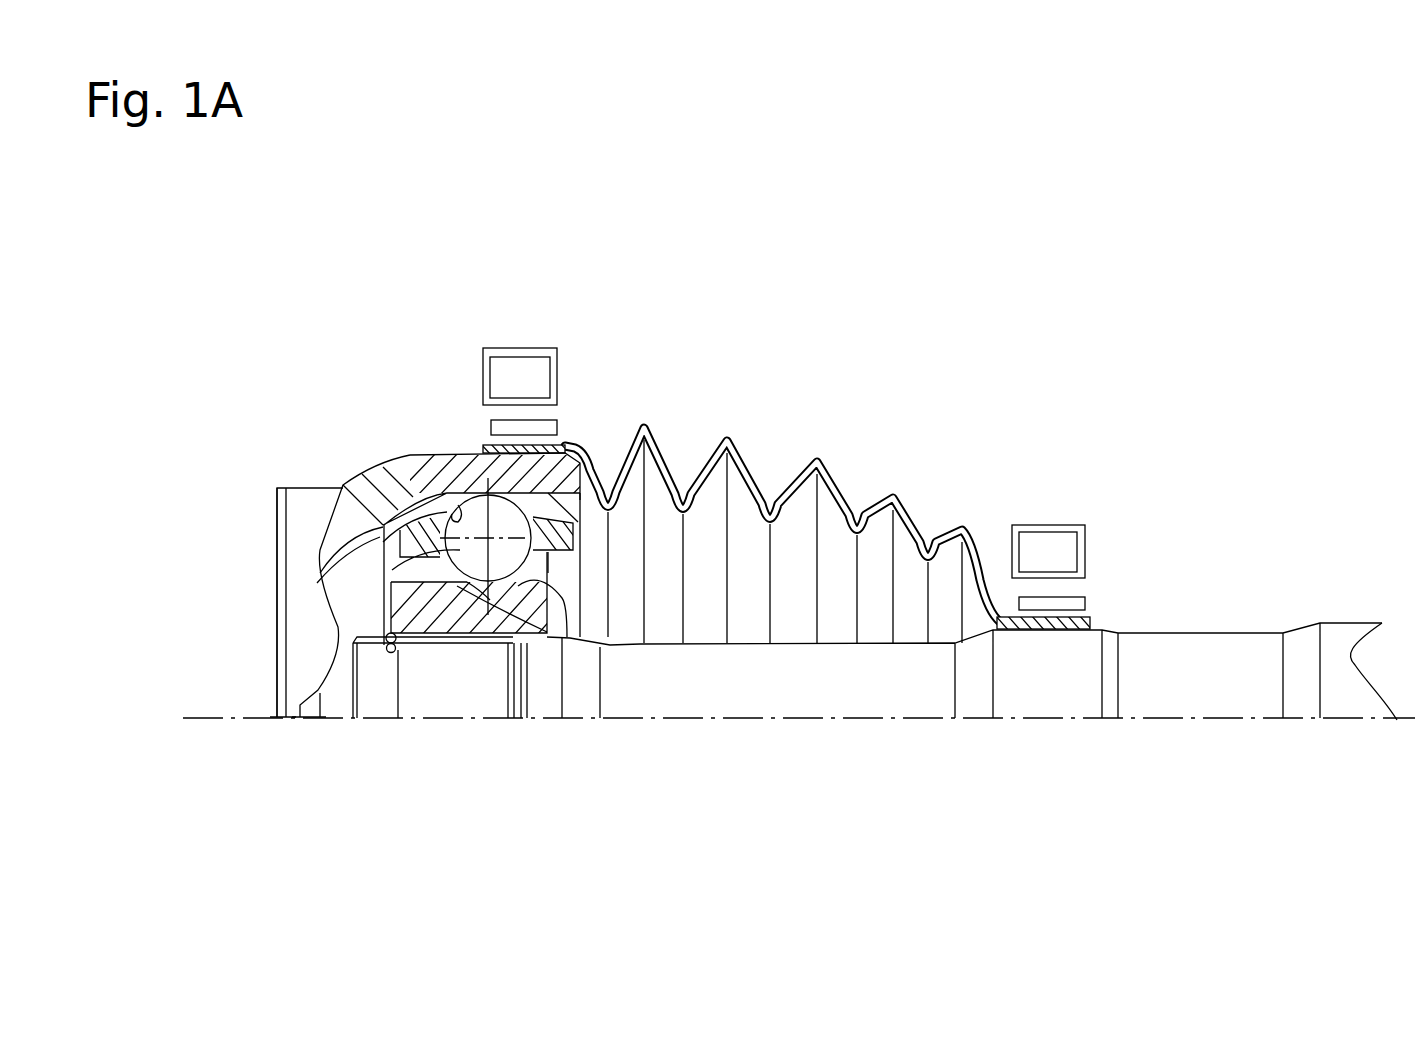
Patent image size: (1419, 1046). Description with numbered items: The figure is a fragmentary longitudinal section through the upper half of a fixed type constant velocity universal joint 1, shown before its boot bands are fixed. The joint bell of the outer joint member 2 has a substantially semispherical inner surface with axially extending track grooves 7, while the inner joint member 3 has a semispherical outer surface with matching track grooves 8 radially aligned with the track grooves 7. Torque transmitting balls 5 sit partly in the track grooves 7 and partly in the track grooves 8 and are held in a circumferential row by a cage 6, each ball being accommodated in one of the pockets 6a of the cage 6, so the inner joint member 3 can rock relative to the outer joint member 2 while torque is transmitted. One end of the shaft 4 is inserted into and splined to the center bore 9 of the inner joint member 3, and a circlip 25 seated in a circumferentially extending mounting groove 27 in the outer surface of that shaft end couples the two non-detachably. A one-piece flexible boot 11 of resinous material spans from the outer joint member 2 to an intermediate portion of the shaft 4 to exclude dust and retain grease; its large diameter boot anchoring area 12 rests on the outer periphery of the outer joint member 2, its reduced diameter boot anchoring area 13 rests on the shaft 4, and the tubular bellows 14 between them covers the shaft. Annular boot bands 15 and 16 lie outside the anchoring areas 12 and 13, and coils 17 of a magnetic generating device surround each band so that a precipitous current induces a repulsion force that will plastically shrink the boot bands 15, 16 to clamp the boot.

The constant velocity universal joint 1 is at (295, 423).
The outer joint member 2 is at (377, 457).
The inner joint member 3 is at (425, 537).
The shaft 4 is at (1225, 632).
The torque transmitting balls 5 is at (470, 560).
The cage 6 is at (530, 517).
The pockets 6a is at (458, 505).
The track grooves 7 is at (608, 528).
The track grooves 8 is at (571, 580).
The center bore 9 is at (423, 645).
The flexible boot 11 is at (783, 442).
The boot anchoring area 12 is at (485, 447).
The boot anchoring area 13 is at (1087, 617).
The tubular bellows 14 is at (728, 437).
The boot band 15 is at (553, 420).
The boot band 16 is at (1077, 595).
The coils 17 is at (519, 348).
The circlip 25 is at (387, 653).
The mounting groove 27 is at (396, 652).